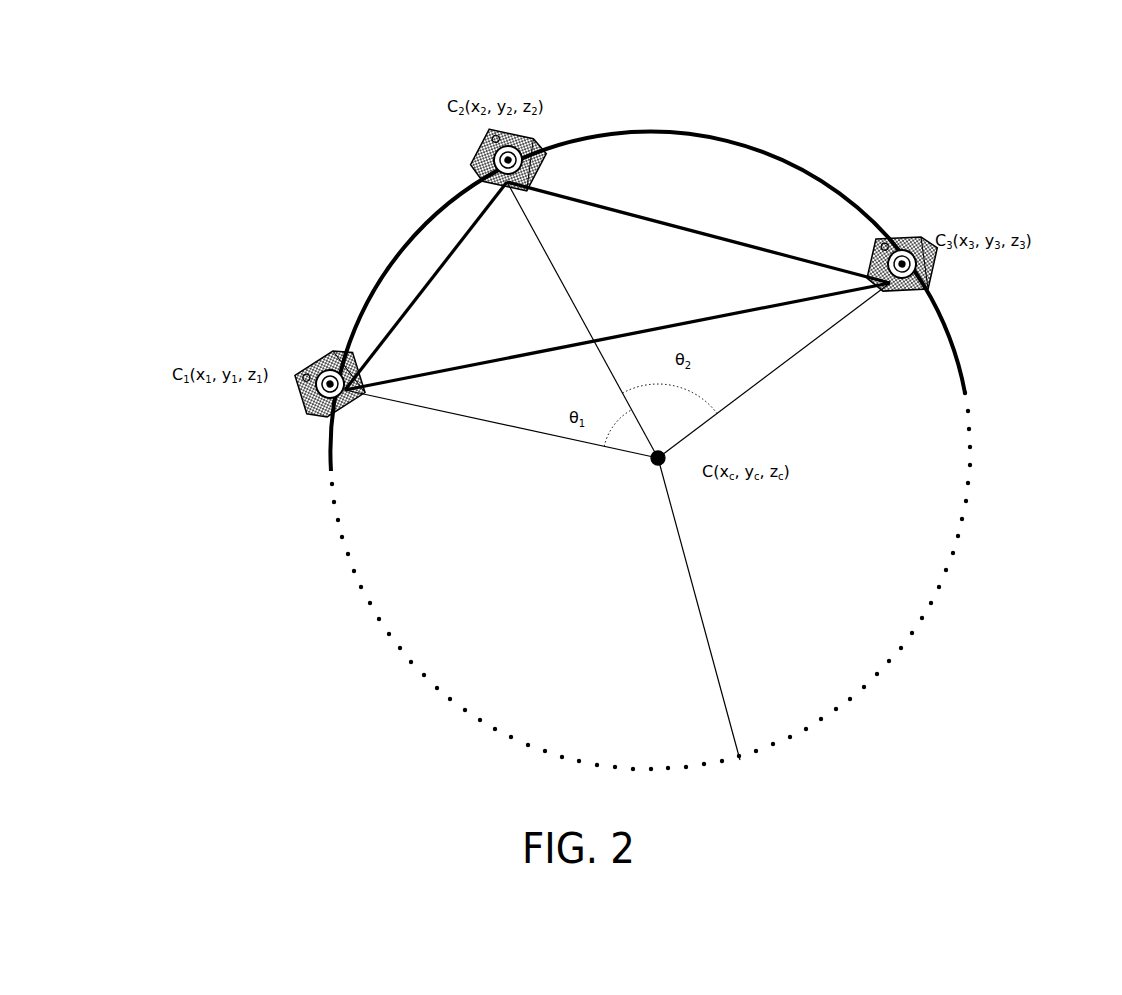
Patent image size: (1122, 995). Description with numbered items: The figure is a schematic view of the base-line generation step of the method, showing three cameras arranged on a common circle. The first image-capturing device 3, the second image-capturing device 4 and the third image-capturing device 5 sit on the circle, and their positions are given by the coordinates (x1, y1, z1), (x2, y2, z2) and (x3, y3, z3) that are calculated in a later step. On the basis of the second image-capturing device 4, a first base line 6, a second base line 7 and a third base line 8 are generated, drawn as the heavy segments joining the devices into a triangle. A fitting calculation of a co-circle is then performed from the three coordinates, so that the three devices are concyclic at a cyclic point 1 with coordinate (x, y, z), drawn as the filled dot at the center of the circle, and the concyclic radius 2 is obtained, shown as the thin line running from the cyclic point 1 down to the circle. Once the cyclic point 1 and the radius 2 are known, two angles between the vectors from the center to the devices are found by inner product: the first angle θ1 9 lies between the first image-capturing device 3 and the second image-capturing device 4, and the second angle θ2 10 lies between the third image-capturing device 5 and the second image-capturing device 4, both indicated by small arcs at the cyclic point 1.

The cyclic point 1 is at (776, 443).
The concyclic radius 2 is at (658, 609).
The first image-capturing device 3 is at (251, 332).
The second image-capturing device 4 is at (516, 119).
The third image-capturing device 5 is at (989, 215).
The first base line 6 is at (426, 286).
The second base line 7 is at (698, 232).
The third base line 8 is at (617, 336).
The first angle θ1 9 is at (501, 423).
The second angle θ2 10 is at (774, 370).